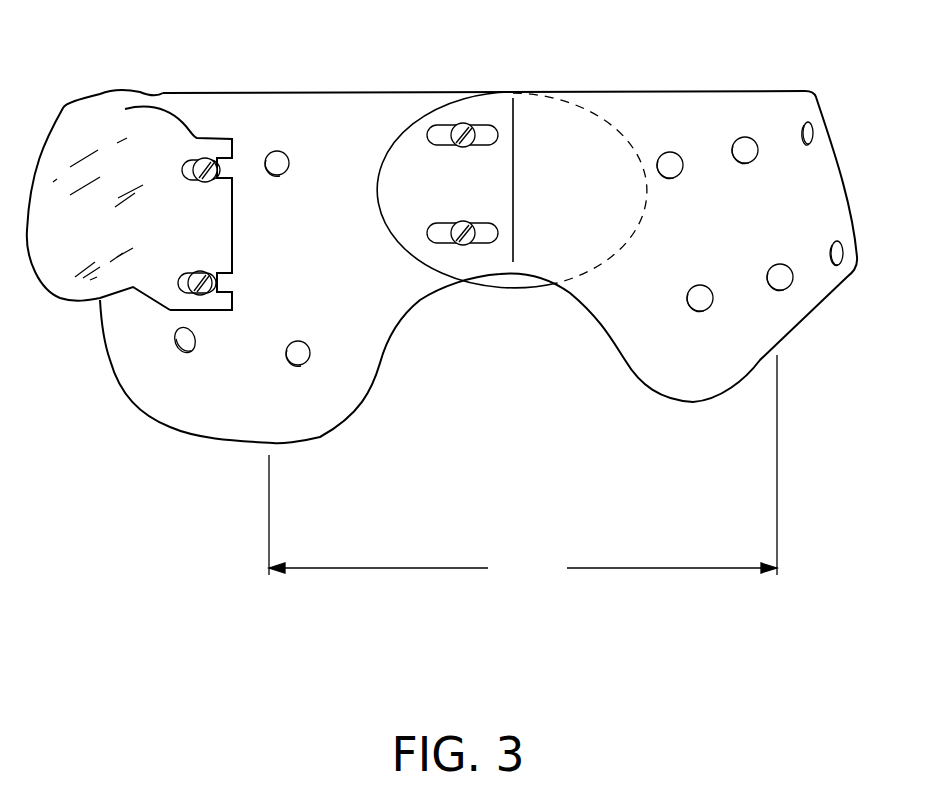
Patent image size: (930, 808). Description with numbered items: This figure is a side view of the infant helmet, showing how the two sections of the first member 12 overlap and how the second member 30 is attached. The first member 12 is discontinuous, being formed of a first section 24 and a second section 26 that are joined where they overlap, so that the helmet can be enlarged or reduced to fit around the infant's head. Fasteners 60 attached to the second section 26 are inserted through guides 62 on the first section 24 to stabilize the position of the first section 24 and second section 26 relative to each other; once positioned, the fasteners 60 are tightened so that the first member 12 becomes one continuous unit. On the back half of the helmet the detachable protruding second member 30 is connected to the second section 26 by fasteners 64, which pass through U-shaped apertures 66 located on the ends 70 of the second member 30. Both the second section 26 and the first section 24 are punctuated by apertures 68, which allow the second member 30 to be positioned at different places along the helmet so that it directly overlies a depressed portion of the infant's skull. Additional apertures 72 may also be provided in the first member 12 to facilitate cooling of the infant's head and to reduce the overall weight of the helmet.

The first member 12 is at (523, 469).
The first section 24 is at (686, 232).
The second section 26 is at (261, 302).
The second member 30 is at (103, 237).
The fasteners 60 is at (468, 124).
The guides 62 is at (441, 124).
The fasteners 64 is at (190, 290).
The U-shaped apertures 66 is at (185, 163).
The apertures 68 is at (215, 275).
The ends 70 is at (171, 237).
The additional apertures 72 is at (303, 341).